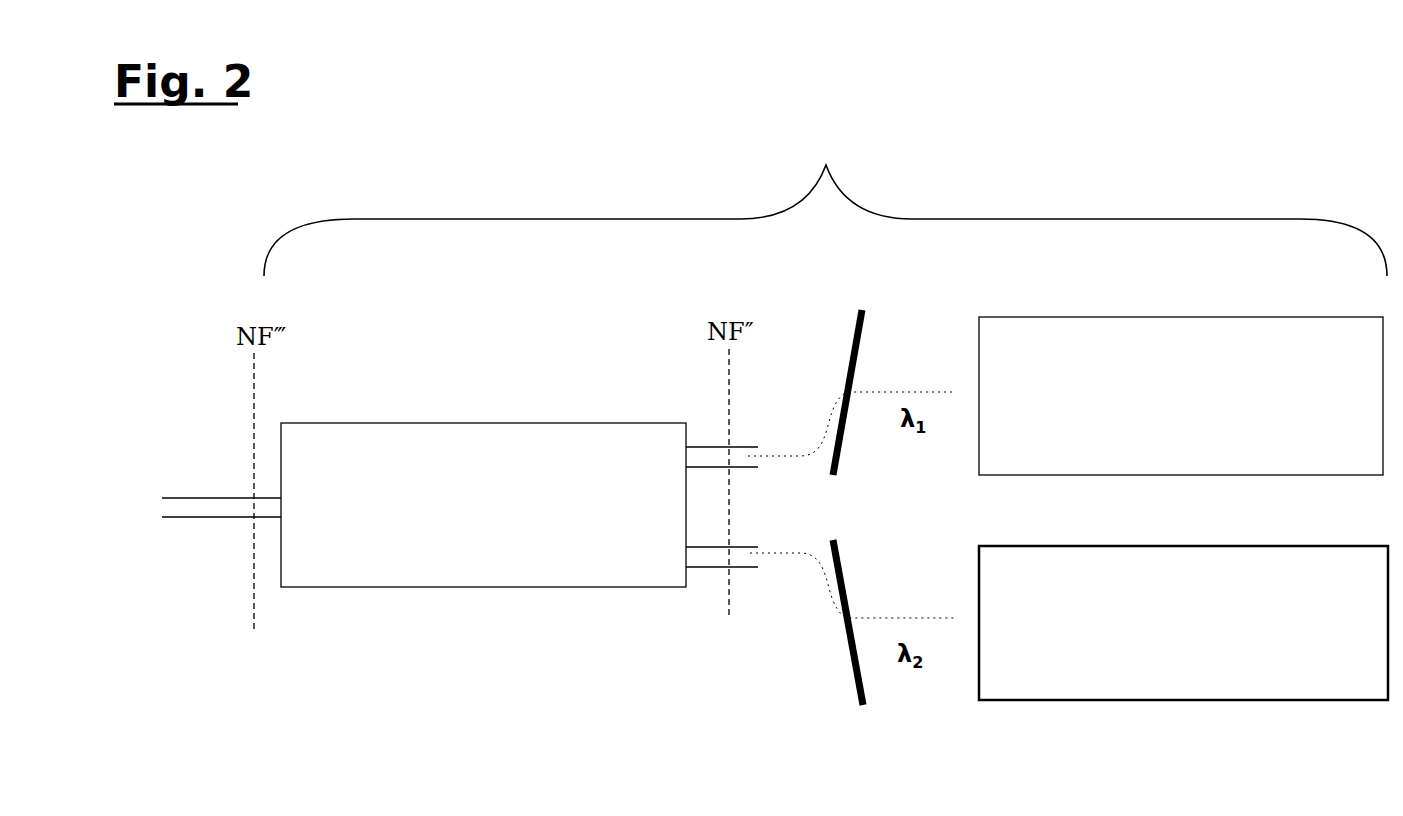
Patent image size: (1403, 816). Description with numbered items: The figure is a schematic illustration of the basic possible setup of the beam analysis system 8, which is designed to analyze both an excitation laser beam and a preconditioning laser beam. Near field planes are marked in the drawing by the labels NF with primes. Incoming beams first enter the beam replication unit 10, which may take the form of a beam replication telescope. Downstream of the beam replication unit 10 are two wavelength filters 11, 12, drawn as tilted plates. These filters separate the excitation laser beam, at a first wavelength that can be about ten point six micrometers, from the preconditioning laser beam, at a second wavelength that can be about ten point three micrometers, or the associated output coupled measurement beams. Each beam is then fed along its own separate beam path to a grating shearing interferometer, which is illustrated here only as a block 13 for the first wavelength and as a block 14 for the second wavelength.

The beam analysis system 8 is at (825, 203).
The beam replication unit 10 is at (586, 543).
The wavelength filter 11 is at (853, 338).
The wavelength filter 12 is at (848, 642).
The grating shearing interferometer 13 is at (1293, 436).
The grating shearing interferometer 14 is at (1293, 663).